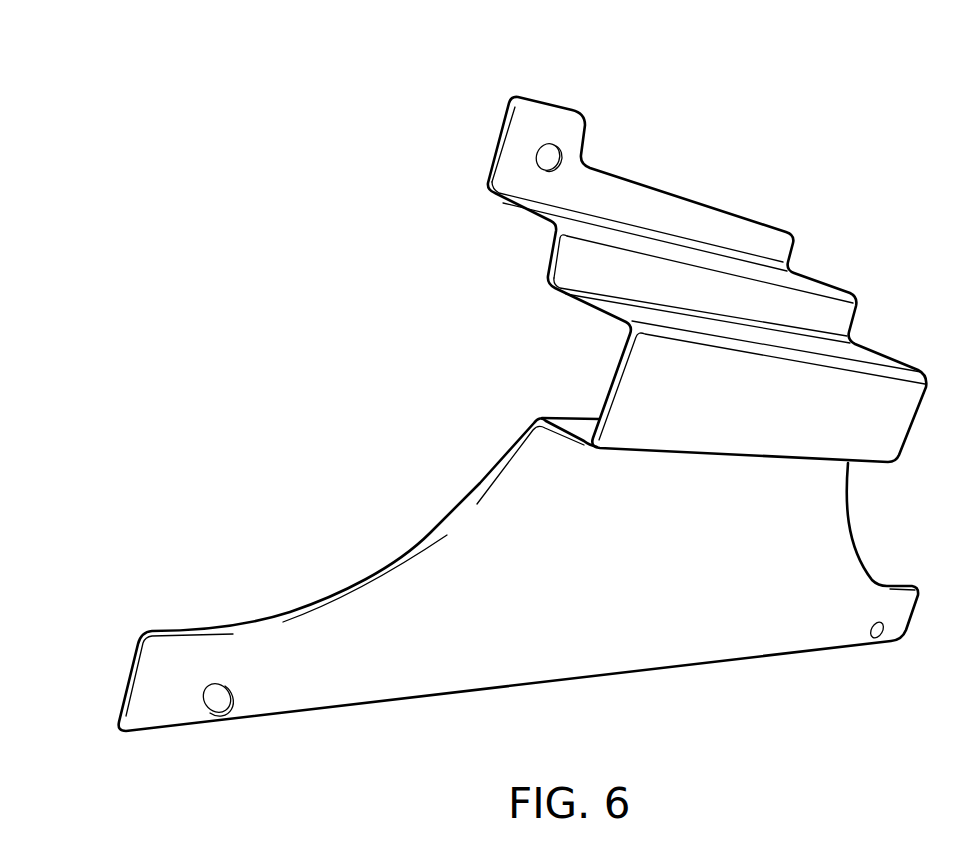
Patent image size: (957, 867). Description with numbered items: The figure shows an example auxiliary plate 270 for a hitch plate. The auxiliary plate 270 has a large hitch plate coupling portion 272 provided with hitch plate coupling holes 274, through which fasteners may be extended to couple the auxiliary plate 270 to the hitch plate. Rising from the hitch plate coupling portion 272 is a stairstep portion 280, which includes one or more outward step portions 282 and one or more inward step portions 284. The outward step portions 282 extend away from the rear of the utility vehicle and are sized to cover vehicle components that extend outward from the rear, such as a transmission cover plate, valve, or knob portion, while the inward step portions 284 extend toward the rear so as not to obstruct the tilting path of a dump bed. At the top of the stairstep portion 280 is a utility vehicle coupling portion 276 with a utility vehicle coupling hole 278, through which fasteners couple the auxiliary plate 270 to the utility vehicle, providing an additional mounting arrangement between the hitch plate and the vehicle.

The auxiliary plate 270 is at (861, 126).
The hitch plate coupling portion 272 is at (572, 655).
The hitch plate coupling holes 274 is at (224, 714).
The utility vehicle coupling portion 276 is at (667, 210).
The utility vehicle coupling holes 278 is at (537, 156).
The stairstep portion 280 is at (853, 275).
The outward step portions 282 is at (610, 391).
The inward step portions 284 is at (549, 257).